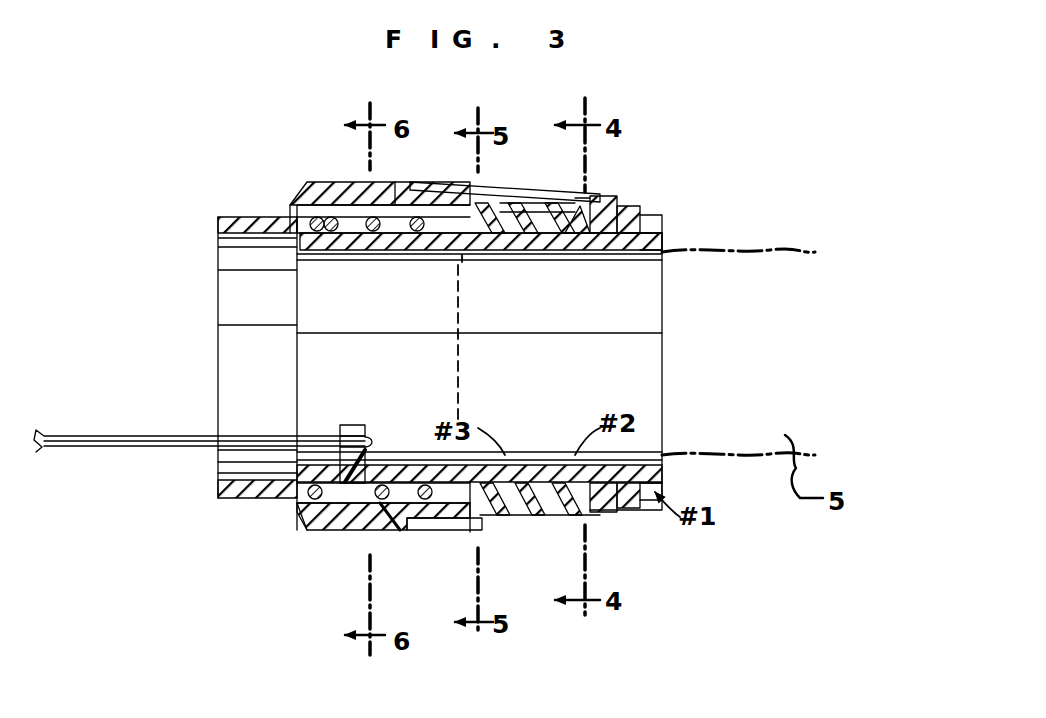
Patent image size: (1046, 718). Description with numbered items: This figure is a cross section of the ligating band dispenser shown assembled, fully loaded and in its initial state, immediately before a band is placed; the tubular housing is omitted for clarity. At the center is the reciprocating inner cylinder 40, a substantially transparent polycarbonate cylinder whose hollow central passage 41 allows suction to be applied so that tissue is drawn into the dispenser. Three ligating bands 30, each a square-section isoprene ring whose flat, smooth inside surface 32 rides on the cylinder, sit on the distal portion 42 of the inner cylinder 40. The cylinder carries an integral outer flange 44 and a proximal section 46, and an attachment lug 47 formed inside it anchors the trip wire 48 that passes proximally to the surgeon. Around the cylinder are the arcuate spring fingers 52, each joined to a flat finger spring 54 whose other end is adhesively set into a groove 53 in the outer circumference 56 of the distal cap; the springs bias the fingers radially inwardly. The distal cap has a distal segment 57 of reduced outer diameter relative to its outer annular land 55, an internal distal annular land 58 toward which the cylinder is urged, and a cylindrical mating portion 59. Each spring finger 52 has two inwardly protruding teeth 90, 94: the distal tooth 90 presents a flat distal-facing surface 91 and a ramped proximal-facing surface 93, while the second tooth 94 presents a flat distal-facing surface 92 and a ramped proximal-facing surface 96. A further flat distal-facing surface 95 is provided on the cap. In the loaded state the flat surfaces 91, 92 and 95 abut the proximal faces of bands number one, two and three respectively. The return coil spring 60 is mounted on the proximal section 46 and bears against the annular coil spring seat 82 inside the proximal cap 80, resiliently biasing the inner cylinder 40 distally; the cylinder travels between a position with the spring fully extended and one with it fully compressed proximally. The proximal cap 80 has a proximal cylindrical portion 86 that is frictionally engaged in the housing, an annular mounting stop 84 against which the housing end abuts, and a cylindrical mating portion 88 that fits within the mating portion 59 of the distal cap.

The ligating band 30 is at (630, 208).
The inside surface 32 is at (510, 465).
The reciprocating inner cylinder 40 is at (668, 344).
The hollow central passage 41 is at (662, 452).
The distal portion 42 is at (665, 470).
The outer flange 44 is at (452, 186).
The proximal section 46 is at (392, 462).
The attachment lug 47 is at (352, 425).
The trip wire 48 is at (96, 436).
The spring finger 52 is at (605, 200).
The groove 53 is at (392, 531).
The flat finger spring 54 is at (518, 192).
The outer annular land 55 is at (470, 532).
The outer circumference 56 is at (395, 183).
The distal segment 57 is at (500, 516).
The internal distal annular land 58 is at (428, 238).
The cylindrical mating portion 59 is at (336, 183).
The return coil spring 60 is at (333, 236).
The proximal cap 80 is at (230, 212).
The annular coil spring seat 82 is at (355, 505).
The annular mounting stop 84 is at (298, 512).
The proximal cylindrical portion 86 is at (232, 500).
The cylindrical mating portion 88 is at (320, 531).
The tooth 90 is at (663, 252).
The flat distal-facing surface 91 is at (642, 221).
The flat distal-facing surface 92 is at (580, 233).
The proximal-facing surface 93 is at (598, 220).
The tooth 94 is at (536, 218).
The flat distal-facing surface 95 is at (480, 220).
The proximal-facing surface 96 is at (462, 320).